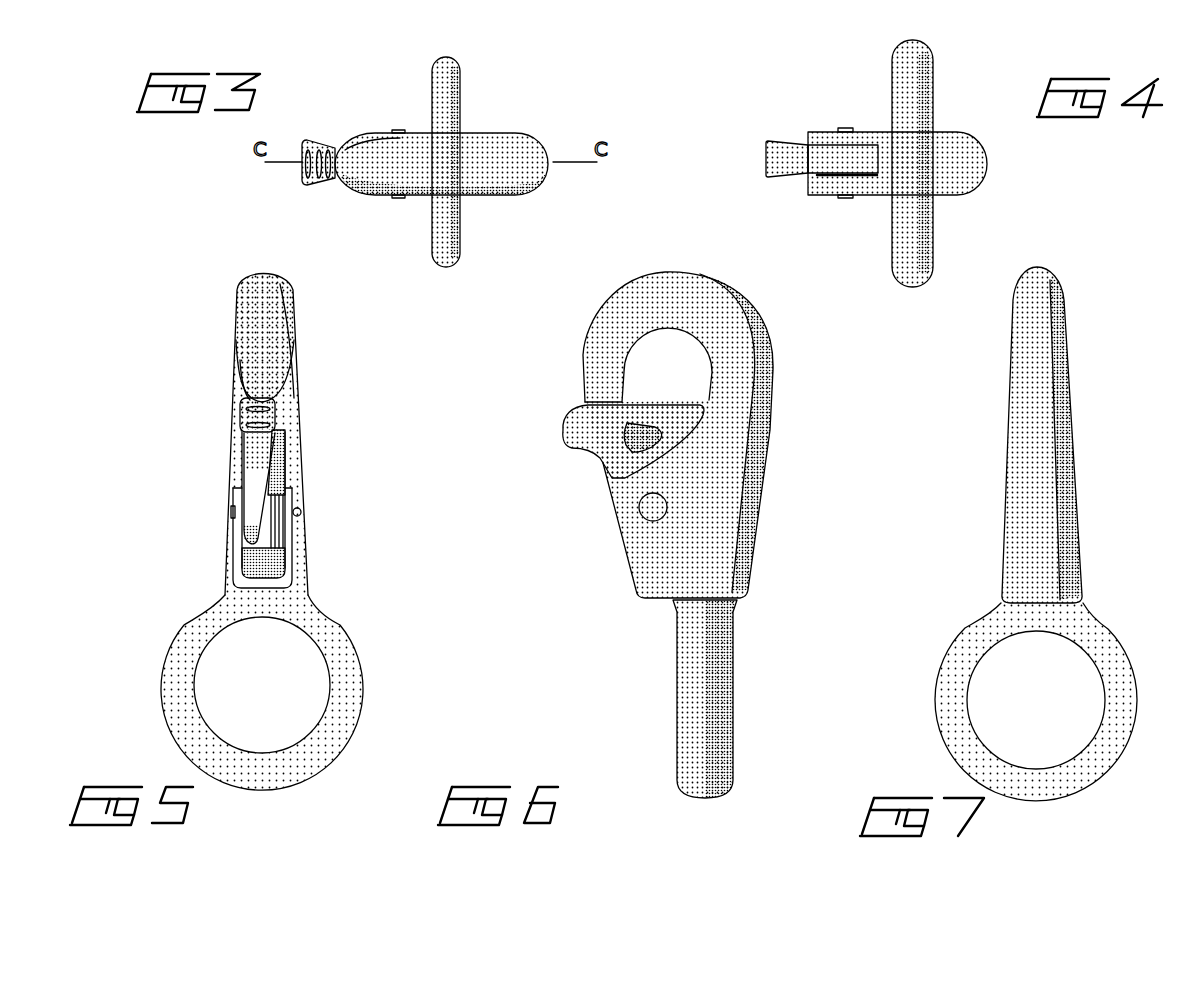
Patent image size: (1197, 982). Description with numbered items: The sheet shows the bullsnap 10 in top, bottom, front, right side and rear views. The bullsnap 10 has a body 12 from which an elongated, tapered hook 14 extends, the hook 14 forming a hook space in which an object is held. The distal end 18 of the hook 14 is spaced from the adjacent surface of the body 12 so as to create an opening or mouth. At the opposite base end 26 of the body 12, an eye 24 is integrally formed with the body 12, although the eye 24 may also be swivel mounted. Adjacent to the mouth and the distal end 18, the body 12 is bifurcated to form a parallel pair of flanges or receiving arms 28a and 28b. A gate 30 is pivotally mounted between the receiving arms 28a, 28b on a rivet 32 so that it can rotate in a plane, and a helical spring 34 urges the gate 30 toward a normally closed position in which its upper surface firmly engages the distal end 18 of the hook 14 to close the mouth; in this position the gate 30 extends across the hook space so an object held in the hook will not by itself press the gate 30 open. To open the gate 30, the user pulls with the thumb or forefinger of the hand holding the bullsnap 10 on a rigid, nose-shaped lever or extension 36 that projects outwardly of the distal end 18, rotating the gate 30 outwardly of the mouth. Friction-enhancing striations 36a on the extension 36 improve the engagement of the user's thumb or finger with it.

In FIG. 6, the bullsnap 10 is at (782, 472).
In FIG. 6, the body 12 is at (745, 398).
In FIG. 3, the hook 14 is at (360, 150).
In FIG. 5, the hook 14 is at (255, 333).
In FIG. 6, the hook 14 is at (630, 308).
In FIG. 5, the distal end 18 is at (253, 388).
In FIG. 6, the distal end 18 is at (600, 385).
In FIG. 3, the eye 24 is at (458, 105).
In FIG. 5, the eye 24 is at (193, 630).
In FIG. 6, the eye 24 is at (692, 675).
In FIG. 7, the eye 24 is at (957, 730).
In FIG. 6, the base end 26 is at (713, 565).
In FIG. 5, the receiving arm 28a is at (235, 525).
In FIG. 5, the receiving arm 28b is at (290, 537).
In FIG. 6, the receiving arm 28b is at (643, 548).
In FIG. 5, the gate 30 is at (253, 443).
In FIG. 6, the gate 30 is at (582, 448).
In FIG. 5, the rivet 32 is at (300, 512).
In FIG. 6, the rivet 32 is at (648, 508).
In FIG. 5, the helical spring 34 is at (287, 485).
In FIG. 3, the extension 36 is at (310, 140).
In FIG. 6, the extension 36 is at (572, 427).
In FIG. 3, the striations 36a is at (313, 187).
In FIG. 5, the striations 36a is at (270, 422).